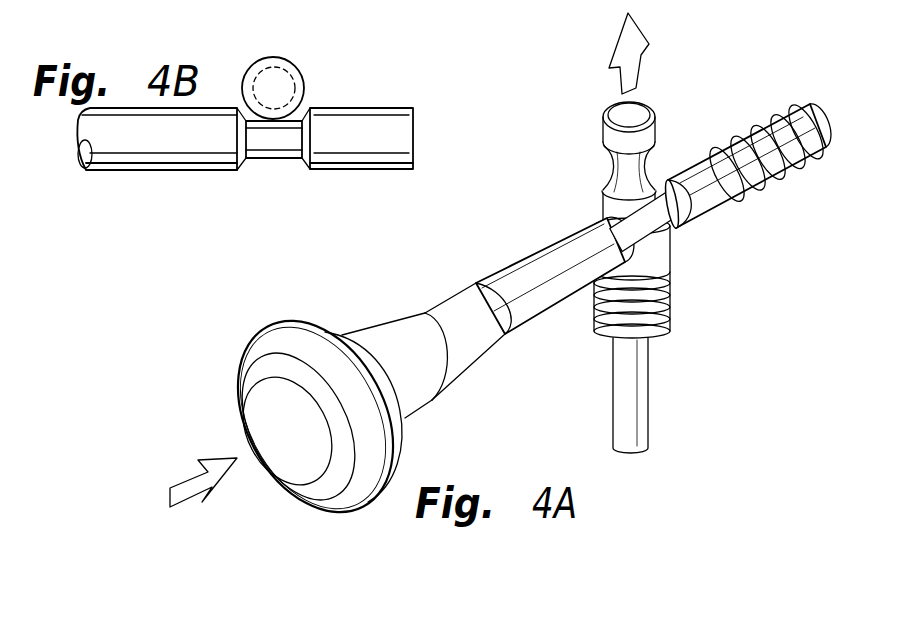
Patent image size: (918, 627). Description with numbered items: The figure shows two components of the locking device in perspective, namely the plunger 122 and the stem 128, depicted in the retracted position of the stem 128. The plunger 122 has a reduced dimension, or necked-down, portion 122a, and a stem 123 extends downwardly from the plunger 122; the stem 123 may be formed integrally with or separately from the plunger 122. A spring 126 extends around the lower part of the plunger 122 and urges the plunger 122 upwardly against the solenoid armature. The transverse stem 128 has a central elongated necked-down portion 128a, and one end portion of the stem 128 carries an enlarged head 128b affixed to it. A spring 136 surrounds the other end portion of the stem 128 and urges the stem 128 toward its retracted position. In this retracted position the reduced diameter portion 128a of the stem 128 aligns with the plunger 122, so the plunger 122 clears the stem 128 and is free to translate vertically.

In FIG. 4B, the plunger 122 is at (281, 57).
In FIG. 4A, the plunger 122 is at (656, 127).
In FIG. 4B, the necked-down portion of plunger 122a is at (307, 90).
In FIG. 4A, the necked-down portion of plunger 122a is at (606, 170).
In FIG. 4A, the stem 123 is at (643, 387).
In FIG. 4A, the spring 126 is at (671, 293).
In FIG. 4B, the stem 128 is at (245, 167).
In FIG. 4A, the stem 128 is at (518, 321).
In FIG. 4B, the necked-down portion of stem 128a is at (272, 168).
In FIG. 4A, the necked-down portion of stem 128a is at (690, 228).
In FIG. 4A, the enlarged head 128b is at (270, 332).
In FIG. 4A, the spring 136 is at (765, 108).